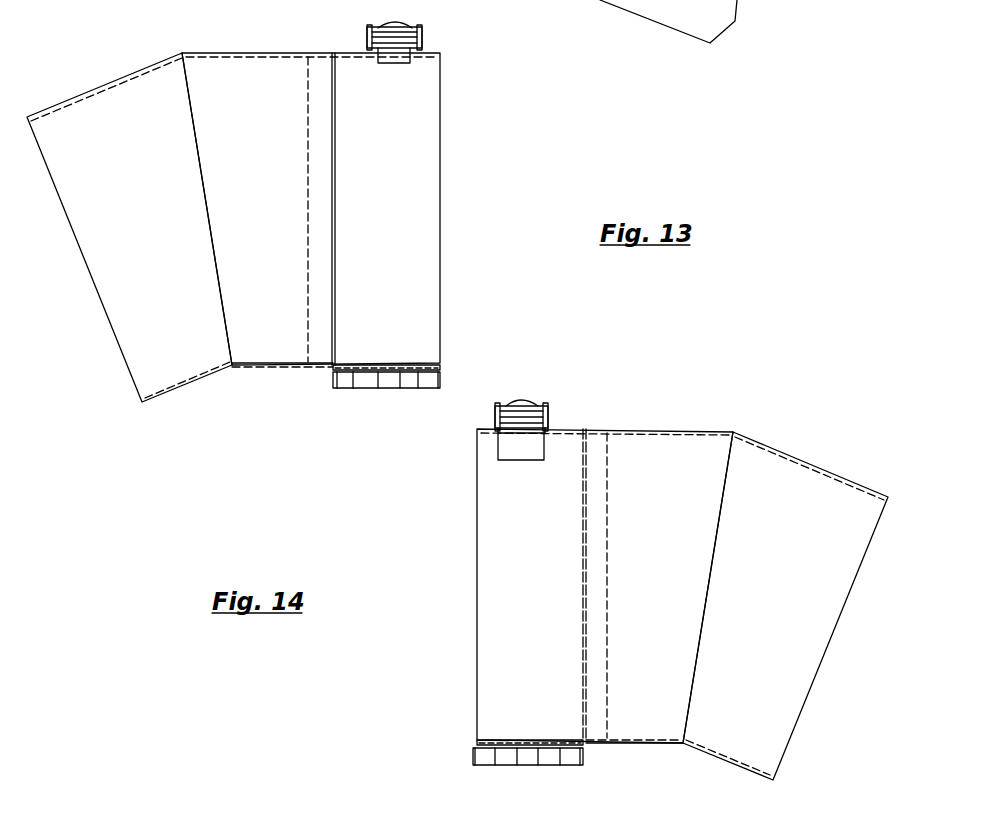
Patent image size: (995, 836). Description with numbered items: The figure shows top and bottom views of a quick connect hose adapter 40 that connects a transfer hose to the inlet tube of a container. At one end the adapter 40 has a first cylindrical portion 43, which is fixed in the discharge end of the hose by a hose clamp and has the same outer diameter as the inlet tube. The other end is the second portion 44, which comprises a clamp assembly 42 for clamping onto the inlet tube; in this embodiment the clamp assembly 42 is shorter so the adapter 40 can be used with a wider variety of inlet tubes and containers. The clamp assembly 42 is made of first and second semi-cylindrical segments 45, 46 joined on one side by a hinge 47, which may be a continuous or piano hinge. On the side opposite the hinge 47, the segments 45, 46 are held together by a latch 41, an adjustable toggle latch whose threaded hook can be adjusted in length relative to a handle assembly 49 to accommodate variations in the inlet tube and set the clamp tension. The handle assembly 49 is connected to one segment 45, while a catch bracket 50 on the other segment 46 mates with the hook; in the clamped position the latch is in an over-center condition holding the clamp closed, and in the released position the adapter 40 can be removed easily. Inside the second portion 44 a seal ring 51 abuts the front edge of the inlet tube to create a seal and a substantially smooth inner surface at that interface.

In FIG. 13, the quick connect hose adapter 40 is at (444, 110).
In FIG. 14, the quick connect hose adapter 40 is at (465, 587).
In FIG. 13, the latch 41 is at (372, 33).
In FIG. 14, the latch 41 is at (538, 415).
In FIG. 13, the clamp assembly 42 is at (410, 293).
In FIG. 14, the clamp assembly 42 is at (507, 500).
In FIG. 13, the first cylindrical portion 43 is at (170, 393).
In FIG. 14, the first cylindrical portion 43 is at (782, 455).
In FIG. 13, the second portion 44 is at (440, 220).
In FIG. 14, the second portion 44 is at (477, 657).
In FIG. 14, the first semi-cylindrical segment 45 is at (497, 550).
In FIG. 13, the second semi-cylindrical segment 46 is at (407, 158).
In FIG. 13, the hinge 47 is at (393, 383).
In FIG. 14, the hinge 47 is at (487, 758).
In FIG. 13, the handle assembly 49 is at (394, 25).
In FIG. 14, the handle assembly 49 is at (518, 400).
In FIG. 13, the catch bracket 50 is at (400, 52).
In FIG. 13, the seal ring 51 is at (285, 363).
In FIG. 14, the seal ring 51 is at (630, 435).